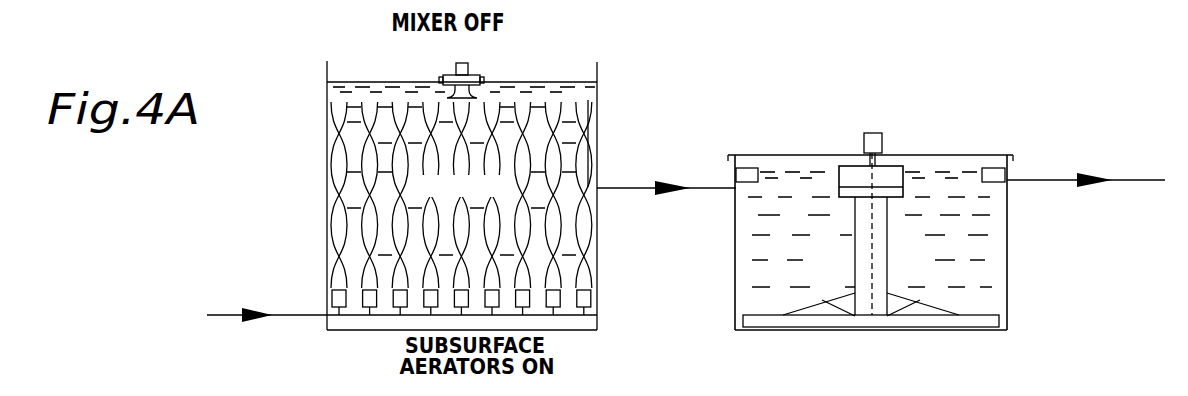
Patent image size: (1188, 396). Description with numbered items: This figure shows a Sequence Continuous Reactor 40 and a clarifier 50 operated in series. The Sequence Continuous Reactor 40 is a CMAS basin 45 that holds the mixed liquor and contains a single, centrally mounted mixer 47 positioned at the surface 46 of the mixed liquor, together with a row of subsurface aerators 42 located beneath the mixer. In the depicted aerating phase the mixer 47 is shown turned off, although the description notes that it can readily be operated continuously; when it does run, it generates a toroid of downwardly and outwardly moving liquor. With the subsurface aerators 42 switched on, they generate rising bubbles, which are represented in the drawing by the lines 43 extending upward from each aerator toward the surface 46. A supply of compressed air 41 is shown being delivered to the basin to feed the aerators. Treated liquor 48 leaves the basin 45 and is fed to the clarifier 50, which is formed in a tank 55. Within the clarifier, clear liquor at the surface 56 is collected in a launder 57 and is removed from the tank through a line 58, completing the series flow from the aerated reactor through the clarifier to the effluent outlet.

The Sequence Continuous Reactor 40 is at (608, 78).
The compressed air supply line 41 is at (225, 313).
The subsurface aerators 42 is at (333, 292).
The lines representing rising bubbles 43 is at (333, 172).
The CMAS basin 45 is at (600, 137).
The surface of the mixed liquor 46 is at (540, 82).
The mixer 47 is at (455, 73).
The treated liquor 48 is at (620, 186).
The clarifier 50 is at (972, 138).
The tank 55 is at (1009, 252).
The surface 56 is at (795, 170).
The launder 57 is at (745, 168).
The line 58 is at (1046, 177).